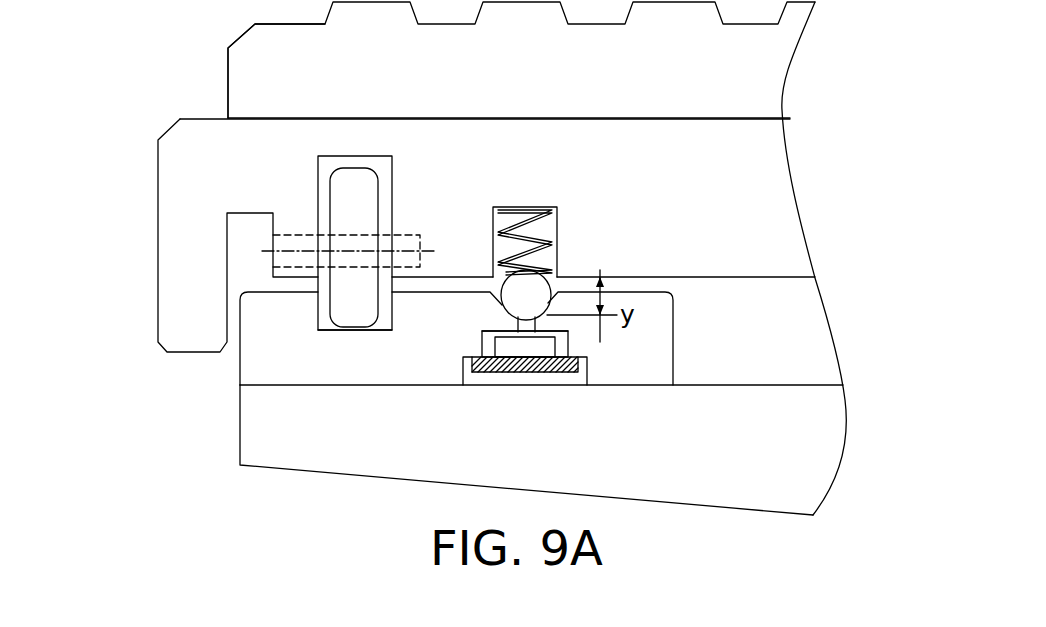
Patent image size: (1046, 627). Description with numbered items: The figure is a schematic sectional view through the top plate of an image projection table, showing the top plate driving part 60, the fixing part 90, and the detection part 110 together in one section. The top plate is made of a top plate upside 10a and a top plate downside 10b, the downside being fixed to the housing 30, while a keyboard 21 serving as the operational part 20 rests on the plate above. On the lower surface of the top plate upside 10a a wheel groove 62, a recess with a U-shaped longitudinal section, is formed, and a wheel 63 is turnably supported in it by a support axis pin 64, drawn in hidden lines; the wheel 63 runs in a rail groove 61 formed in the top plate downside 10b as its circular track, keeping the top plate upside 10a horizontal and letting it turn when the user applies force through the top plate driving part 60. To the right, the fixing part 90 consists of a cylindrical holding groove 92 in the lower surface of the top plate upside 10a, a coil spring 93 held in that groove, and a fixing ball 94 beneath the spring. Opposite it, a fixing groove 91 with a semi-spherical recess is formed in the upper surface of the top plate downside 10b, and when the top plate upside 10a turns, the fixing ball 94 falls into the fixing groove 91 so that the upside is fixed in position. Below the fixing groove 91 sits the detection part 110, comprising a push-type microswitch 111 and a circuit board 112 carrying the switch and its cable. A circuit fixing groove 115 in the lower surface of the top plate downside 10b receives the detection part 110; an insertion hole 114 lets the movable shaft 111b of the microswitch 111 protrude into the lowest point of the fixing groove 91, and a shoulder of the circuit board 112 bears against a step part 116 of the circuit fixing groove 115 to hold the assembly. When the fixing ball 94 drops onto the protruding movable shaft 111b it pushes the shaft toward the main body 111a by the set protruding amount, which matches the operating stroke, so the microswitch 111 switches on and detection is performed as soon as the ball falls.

The operational part 20 is at (154, 67).
The keyboard 21 is at (243, 66).
The top plate upside 10a is at (181, 212).
The top plate downside 10b is at (253, 370).
The housing 30 is at (257, 441).
The top plate driving part 60 is at (362, 194).
The rail groove 61 is at (323, 305).
The wheel groove 62 is at (325, 167).
The wheel 63 is at (368, 193).
The support axis pin 64 is at (407, 231).
The fixing part 90 is at (520, 230).
The fixing groove 91 is at (512, 317).
The holding groove 92 is at (497, 206).
The coil spring 93 is at (550, 228).
The fixing ball 94 is at (540, 290).
The detection part 110 is at (599, 395).
The microswitch 111 is at (654, 345).
The main body 111a is at (544, 345).
The movable shaft 111b is at (541, 318).
The circuit board 112 is at (527, 374).
The insertion hole 114 is at (513, 332).
The circuit fixing groove 115 is at (473, 386).
The step part 116 is at (581, 386).